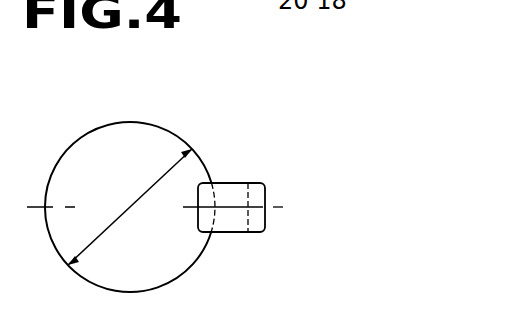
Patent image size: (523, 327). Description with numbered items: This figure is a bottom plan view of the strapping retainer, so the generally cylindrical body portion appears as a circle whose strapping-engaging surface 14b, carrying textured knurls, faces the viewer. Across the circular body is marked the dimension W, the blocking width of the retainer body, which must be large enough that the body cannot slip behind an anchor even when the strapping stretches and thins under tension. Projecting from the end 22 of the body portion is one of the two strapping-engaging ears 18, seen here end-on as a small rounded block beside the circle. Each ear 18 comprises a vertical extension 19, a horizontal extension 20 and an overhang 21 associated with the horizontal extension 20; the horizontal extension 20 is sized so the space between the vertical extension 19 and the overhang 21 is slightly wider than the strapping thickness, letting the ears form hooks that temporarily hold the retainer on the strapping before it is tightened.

The strapping-engaging surface 14b is at (110, 123).
The end of the body portion 22 is at (143, 163).
The blocking width W is at (68, 265).
The strapping-engaging ear 18 is at (262, 244).
The vertical extension 19 is at (198, 218).
The horizontal extension 20 is at (232, 220).
The overhang 21 is at (266, 197).